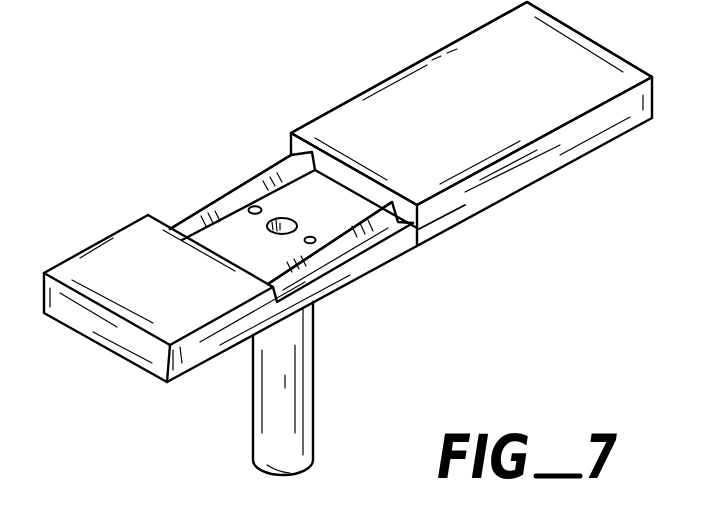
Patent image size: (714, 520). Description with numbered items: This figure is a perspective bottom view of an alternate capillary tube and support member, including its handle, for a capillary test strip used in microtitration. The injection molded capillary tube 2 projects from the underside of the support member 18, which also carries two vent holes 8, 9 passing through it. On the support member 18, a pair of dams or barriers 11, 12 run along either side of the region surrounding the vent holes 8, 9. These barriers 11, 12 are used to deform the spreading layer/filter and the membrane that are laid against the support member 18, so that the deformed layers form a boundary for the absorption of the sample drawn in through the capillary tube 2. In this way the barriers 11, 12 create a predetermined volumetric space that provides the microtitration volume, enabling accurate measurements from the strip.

The capillary tube 2 is at (273, 417).
The vent hole 8 is at (313, 238).
The vent hole 9 is at (257, 206).
The dam or barrier 11 is at (193, 225).
The dam or barrier 12 is at (352, 238).
The support member 18 is at (500, 122).